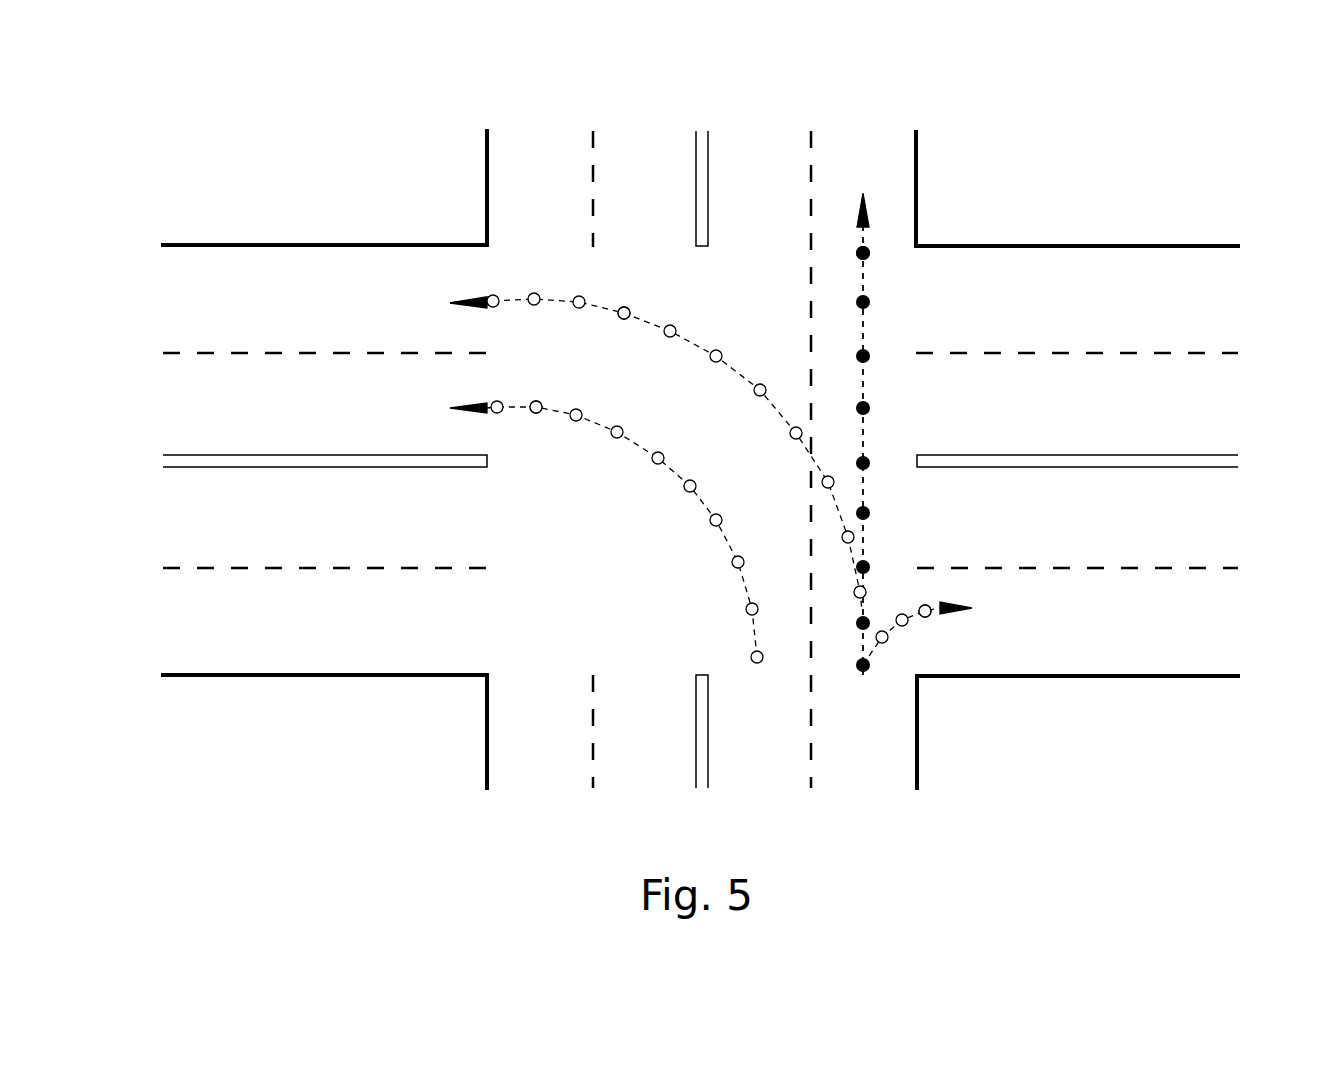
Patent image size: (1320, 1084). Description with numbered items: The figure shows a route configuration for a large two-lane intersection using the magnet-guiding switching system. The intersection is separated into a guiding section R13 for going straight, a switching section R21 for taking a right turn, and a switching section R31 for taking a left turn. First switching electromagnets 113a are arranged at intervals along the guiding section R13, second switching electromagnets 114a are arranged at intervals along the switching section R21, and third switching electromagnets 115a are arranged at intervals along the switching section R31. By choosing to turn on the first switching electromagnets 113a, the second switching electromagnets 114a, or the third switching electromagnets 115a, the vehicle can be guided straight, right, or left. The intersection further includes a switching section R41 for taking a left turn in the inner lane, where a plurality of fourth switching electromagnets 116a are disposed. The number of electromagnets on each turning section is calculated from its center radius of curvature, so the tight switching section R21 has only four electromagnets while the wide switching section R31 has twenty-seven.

The first switching electromagnets 113a is at (866, 250).
The second switching electromagnets 114a is at (928, 617).
The third switching electromagnets 115a is at (624, 307).
The fourth switching electromagnets 116a is at (533, 400).
The guiding section R13 is at (866, 275).
The switching section R21 is at (907, 606).
The switching section R31 is at (700, 345).
The switching section R41 is at (678, 470).